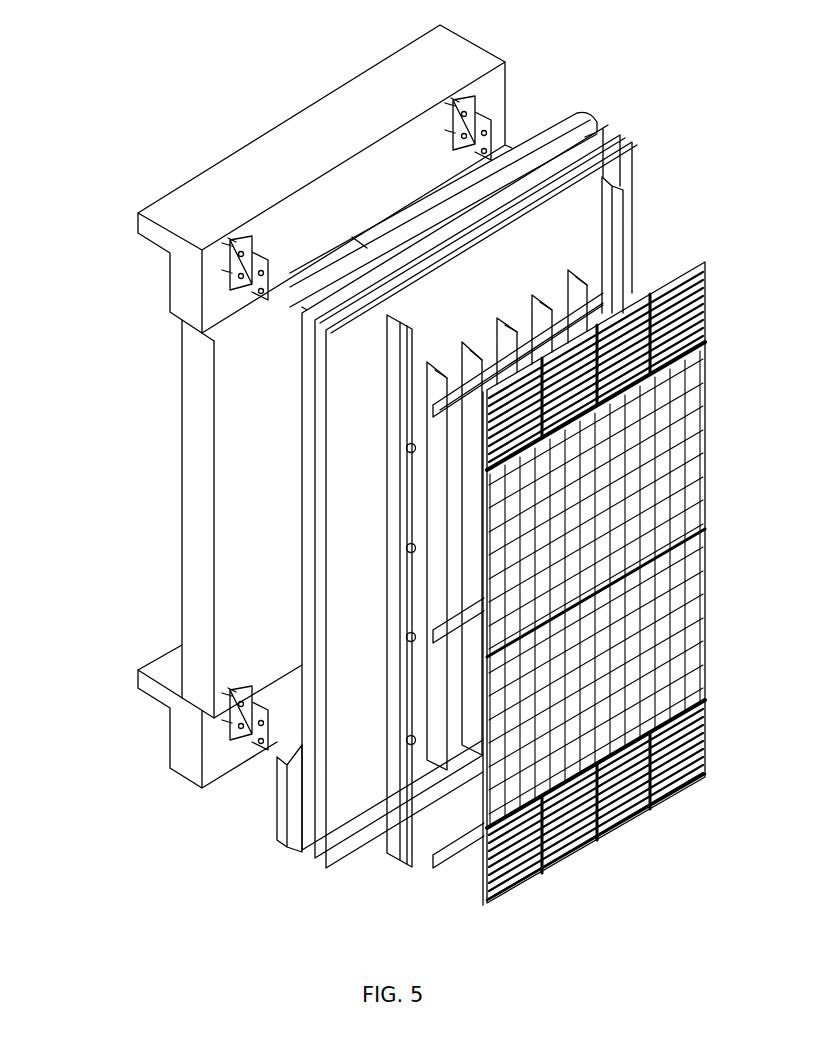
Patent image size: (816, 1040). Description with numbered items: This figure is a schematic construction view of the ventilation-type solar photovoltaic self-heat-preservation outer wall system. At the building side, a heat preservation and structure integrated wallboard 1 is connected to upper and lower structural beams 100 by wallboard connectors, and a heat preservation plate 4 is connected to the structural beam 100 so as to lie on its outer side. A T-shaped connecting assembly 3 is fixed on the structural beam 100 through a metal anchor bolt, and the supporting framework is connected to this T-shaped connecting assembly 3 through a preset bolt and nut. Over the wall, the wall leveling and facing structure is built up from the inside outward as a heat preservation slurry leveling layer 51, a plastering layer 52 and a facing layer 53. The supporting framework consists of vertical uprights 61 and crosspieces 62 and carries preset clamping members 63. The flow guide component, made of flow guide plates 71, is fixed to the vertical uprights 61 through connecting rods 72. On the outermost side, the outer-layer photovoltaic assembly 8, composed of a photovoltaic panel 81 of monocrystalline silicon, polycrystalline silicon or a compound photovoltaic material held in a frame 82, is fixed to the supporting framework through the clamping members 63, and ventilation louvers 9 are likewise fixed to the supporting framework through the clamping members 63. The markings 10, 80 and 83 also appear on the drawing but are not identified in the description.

The building structure 10 is at (93, 263).
The structural beam 100 is at (185, 268).
The heat preservation and structure integrated wallboard 1 is at (200, 509).
The T-shaped connecting assembly 3 is at (487, 112).
The heat preservation plate 4 is at (287, 810).
The heat preservation slurry leveling layer 51 is at (610, 130).
The plastering layer 52 is at (620, 146).
The facing layer 53 is at (623, 170).
The vertical upright 61 is at (397, 490).
The crosspiece 62 is at (400, 670).
The clamping member 63 is at (405, 550).
The flow guide plate 71 is at (437, 372).
The connecting rod 72 is at (438, 400).
The bottom rail 80 is at (428, 857).
The outer-layer photovoltaic assembly 8 is at (705, 387).
The photovoltaic panel 81 is at (708, 457).
The frame 82 is at (708, 488).
The bottom frame 83 is at (705, 766).
The ventilation louver 9 is at (705, 306).